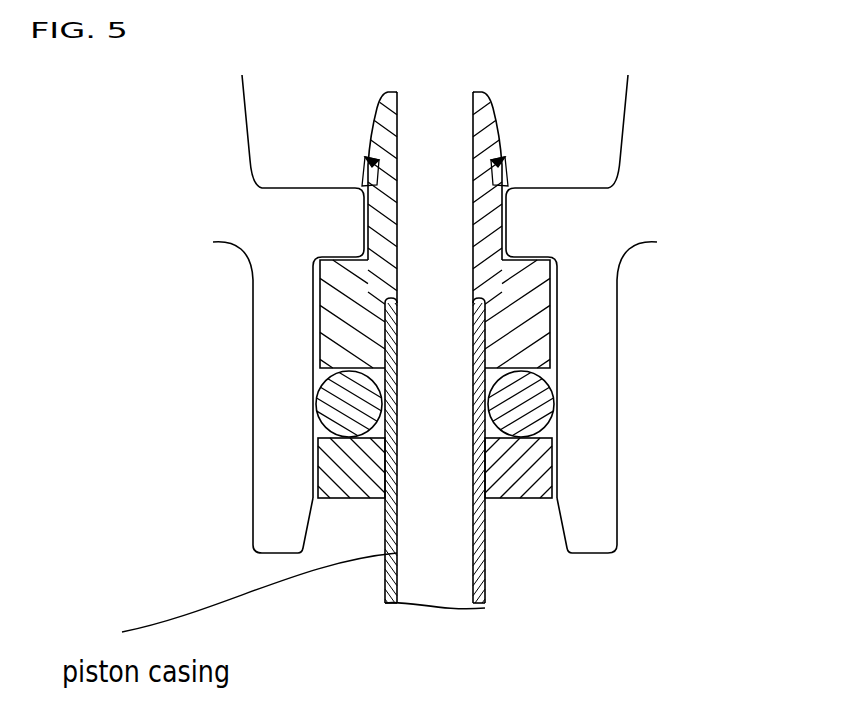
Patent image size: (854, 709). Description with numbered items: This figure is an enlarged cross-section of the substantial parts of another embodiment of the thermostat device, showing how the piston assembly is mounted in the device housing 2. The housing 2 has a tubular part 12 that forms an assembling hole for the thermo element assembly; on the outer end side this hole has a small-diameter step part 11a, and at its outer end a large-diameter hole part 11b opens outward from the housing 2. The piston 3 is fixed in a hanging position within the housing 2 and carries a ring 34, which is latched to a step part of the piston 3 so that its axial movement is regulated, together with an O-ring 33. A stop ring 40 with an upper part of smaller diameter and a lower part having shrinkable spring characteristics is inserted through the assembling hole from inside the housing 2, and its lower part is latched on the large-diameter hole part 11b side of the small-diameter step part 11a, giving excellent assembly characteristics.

The device housing 2 is at (177, 153).
The piston 3 is at (450, 577).
The small-diameter step part 11a is at (345, 223).
The large-diameter hole part 11b is at (250, 160).
The tubular part 12 is at (268, 506).
The O-ring 33 is at (315, 402).
The ring 34 is at (322, 466).
The stop ring 40 is at (507, 172).